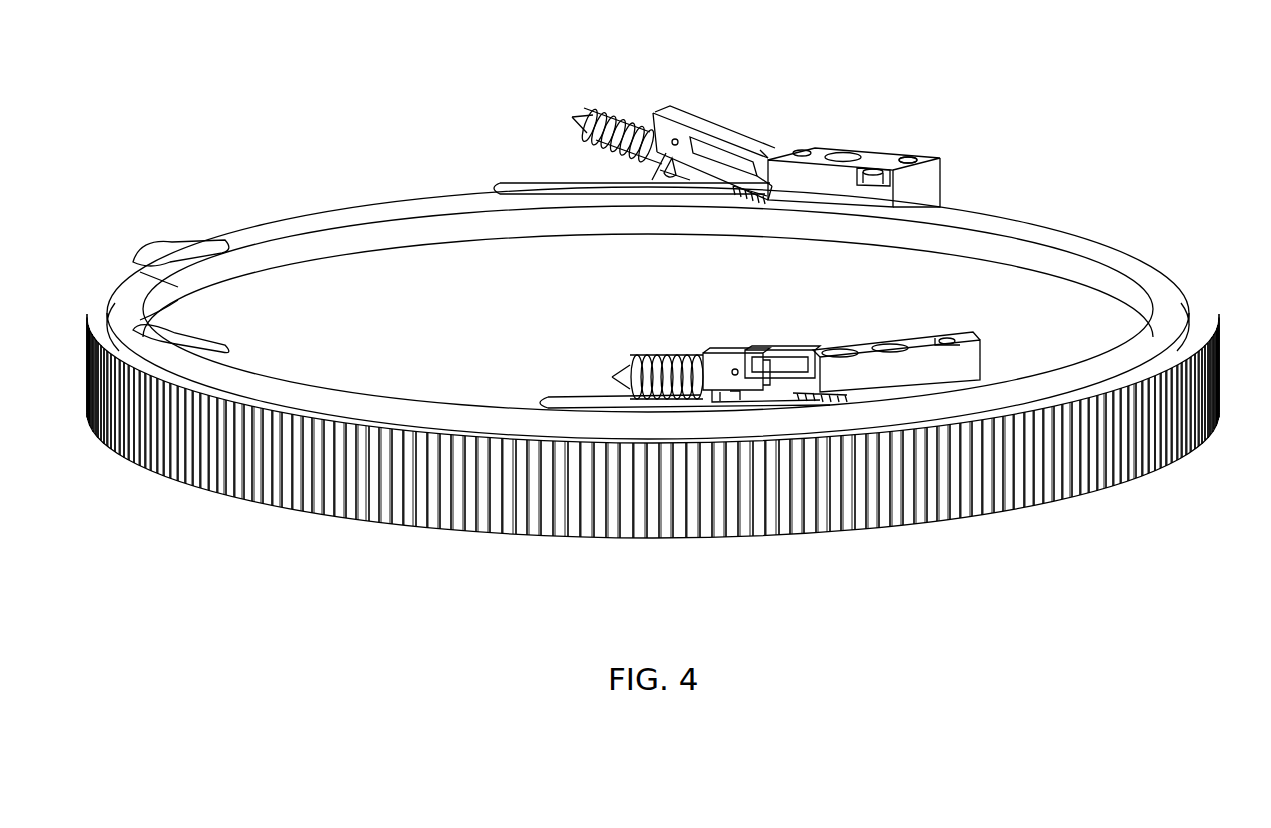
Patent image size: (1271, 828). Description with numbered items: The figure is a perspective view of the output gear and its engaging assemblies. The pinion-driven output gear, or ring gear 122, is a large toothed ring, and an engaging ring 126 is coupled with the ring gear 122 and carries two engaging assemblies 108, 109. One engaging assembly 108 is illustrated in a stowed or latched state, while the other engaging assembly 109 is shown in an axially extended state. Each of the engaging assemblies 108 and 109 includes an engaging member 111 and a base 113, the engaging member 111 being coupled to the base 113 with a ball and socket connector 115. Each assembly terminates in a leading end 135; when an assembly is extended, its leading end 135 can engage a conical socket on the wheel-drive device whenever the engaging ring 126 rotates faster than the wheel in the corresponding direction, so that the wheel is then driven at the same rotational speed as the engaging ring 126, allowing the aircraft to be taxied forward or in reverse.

The engaging assembly 108 is at (850, 150).
The engaging assembly 109 is at (912, 375).
The engaging member 111 is at (728, 140).
The base 113 is at (916, 158).
The ball and socket connector 115 is at (797, 150).
The ring gear 122 is at (320, 516).
The engaging ring 126 is at (1068, 232).
The leading end 135 is at (580, 112).